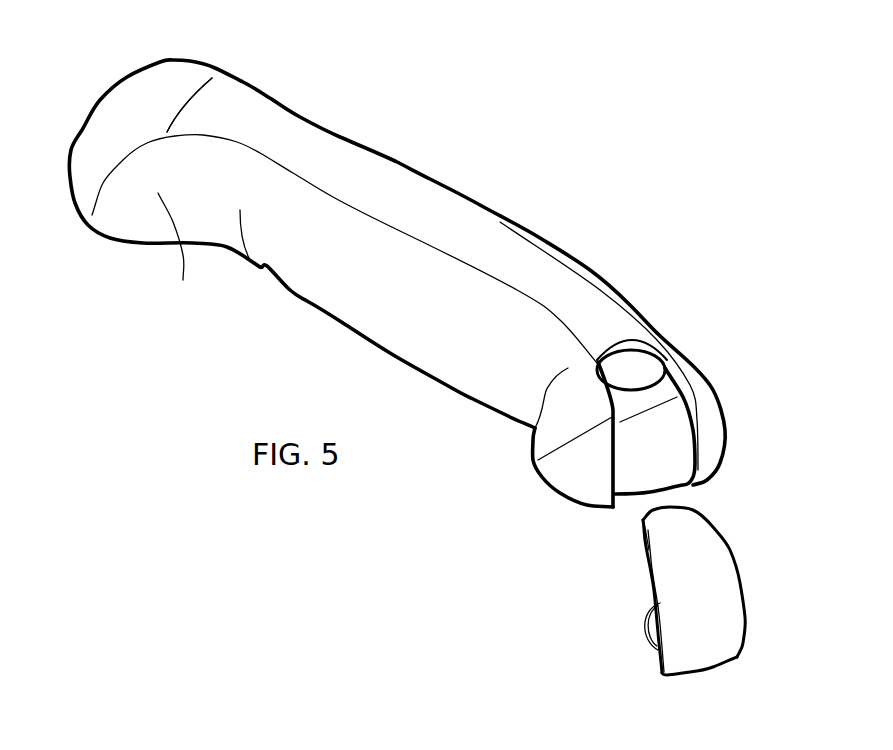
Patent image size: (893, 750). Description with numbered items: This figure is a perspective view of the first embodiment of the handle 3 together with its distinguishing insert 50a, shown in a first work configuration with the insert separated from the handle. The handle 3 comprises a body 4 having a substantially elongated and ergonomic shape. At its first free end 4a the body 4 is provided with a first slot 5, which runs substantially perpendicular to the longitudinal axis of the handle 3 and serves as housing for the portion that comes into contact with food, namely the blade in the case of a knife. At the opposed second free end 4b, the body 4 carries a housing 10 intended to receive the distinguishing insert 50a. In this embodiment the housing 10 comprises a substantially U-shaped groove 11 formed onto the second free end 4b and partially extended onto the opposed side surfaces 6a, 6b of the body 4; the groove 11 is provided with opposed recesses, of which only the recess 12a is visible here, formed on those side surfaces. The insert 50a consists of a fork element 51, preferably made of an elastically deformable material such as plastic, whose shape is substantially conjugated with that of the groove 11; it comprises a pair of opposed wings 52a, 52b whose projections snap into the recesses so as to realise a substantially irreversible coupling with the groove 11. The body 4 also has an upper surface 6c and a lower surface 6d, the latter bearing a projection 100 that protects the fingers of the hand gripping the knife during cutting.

The handle 3 is at (318, 350).
The body 4 is at (463, 195).
The first free end 4a is at (199, 57).
The second free end 4b is at (725, 382).
The first slot 5 is at (78, 214).
The side surface 6a is at (273, 100).
The side surface 6b is at (387, 358).
The upper surface 6c is at (393, 163).
The lower surface 6d is at (477, 370).
The housing 10 is at (630, 505).
The U-shaped groove 11 is at (686, 478).
The recess 12a is at (635, 365).
The distinguishing insert 50a is at (645, 682).
The fork element 51 is at (713, 645).
The wing 52a is at (690, 533).
The wing 52b is at (646, 625).
The projection 100 is at (183, 280).